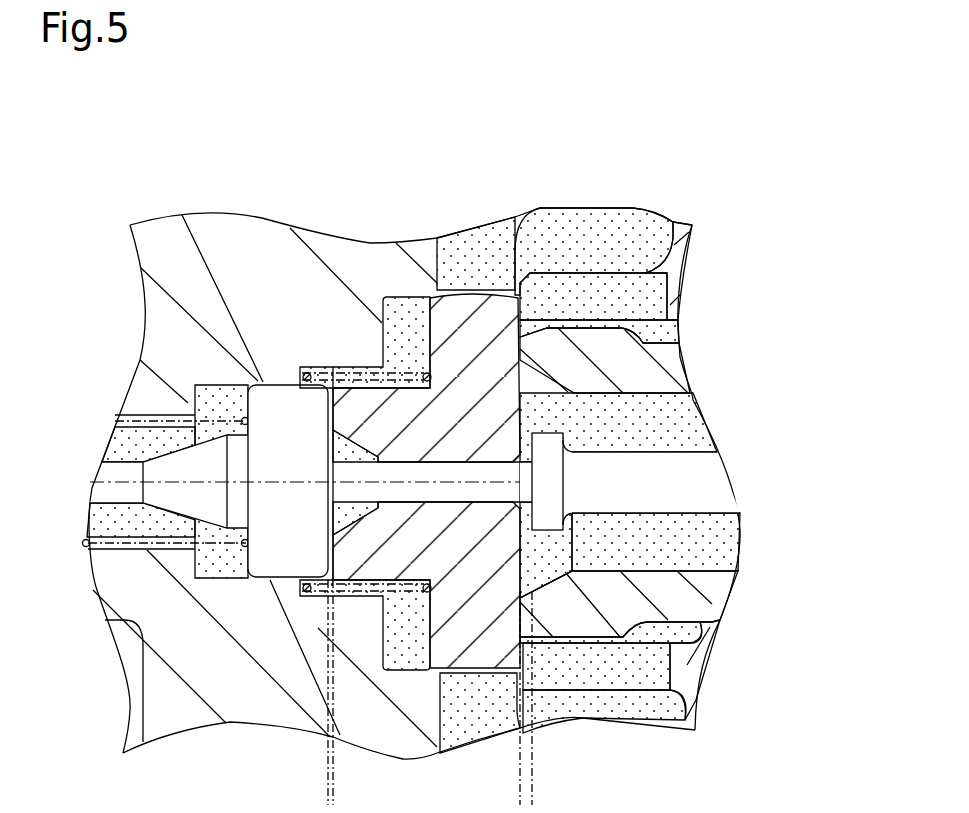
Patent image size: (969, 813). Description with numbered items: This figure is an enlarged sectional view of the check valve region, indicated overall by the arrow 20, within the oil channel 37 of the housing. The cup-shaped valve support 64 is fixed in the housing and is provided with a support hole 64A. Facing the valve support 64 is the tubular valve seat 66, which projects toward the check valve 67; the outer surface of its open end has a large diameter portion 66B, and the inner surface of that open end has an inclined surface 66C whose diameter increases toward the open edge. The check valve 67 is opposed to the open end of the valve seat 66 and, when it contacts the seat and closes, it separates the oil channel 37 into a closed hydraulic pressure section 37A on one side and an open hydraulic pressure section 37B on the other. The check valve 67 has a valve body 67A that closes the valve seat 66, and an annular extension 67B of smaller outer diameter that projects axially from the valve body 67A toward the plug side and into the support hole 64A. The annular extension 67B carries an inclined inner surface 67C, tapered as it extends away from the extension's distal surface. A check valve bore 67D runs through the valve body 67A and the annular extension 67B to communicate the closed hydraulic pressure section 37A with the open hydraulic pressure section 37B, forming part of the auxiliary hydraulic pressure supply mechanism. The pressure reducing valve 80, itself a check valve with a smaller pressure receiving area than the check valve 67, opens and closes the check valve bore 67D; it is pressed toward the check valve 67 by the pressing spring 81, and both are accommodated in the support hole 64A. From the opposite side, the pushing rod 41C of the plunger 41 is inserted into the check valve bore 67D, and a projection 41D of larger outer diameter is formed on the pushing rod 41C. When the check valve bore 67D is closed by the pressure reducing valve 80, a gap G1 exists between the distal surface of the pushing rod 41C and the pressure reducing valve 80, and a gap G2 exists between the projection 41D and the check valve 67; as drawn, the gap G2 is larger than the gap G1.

The valve device 20 is at (135, 166).
The oil channel 37 is at (673, 210).
The closed hydraulic pressure section 37A is at (405, 317).
The open hydraulic pressure section 37B is at (715, 545).
The plunger 41 is at (701, 436).
The pushing rod 41C is at (730, 505).
The projection 41D is at (572, 398).
The valve support 64 is at (192, 722).
The support hole 64A is at (205, 576).
The valve seat 66 is at (697, 638).
The large diameter portion 66B is at (587, 628).
The inclined surface 66C is at (528, 583).
The check valve 67 is at (421, 663).
The valve body 67A is at (468, 663).
The annular extension 67B is at (360, 393).
The inclined inner surface 67C is at (352, 452).
The check valve bore 67D is at (442, 497).
The pressure reducing valve 80 is at (270, 385).
The pressing spring 81 is at (140, 418).
The gap G1 is at (341, 797).
The gap G2 is at (496, 793).